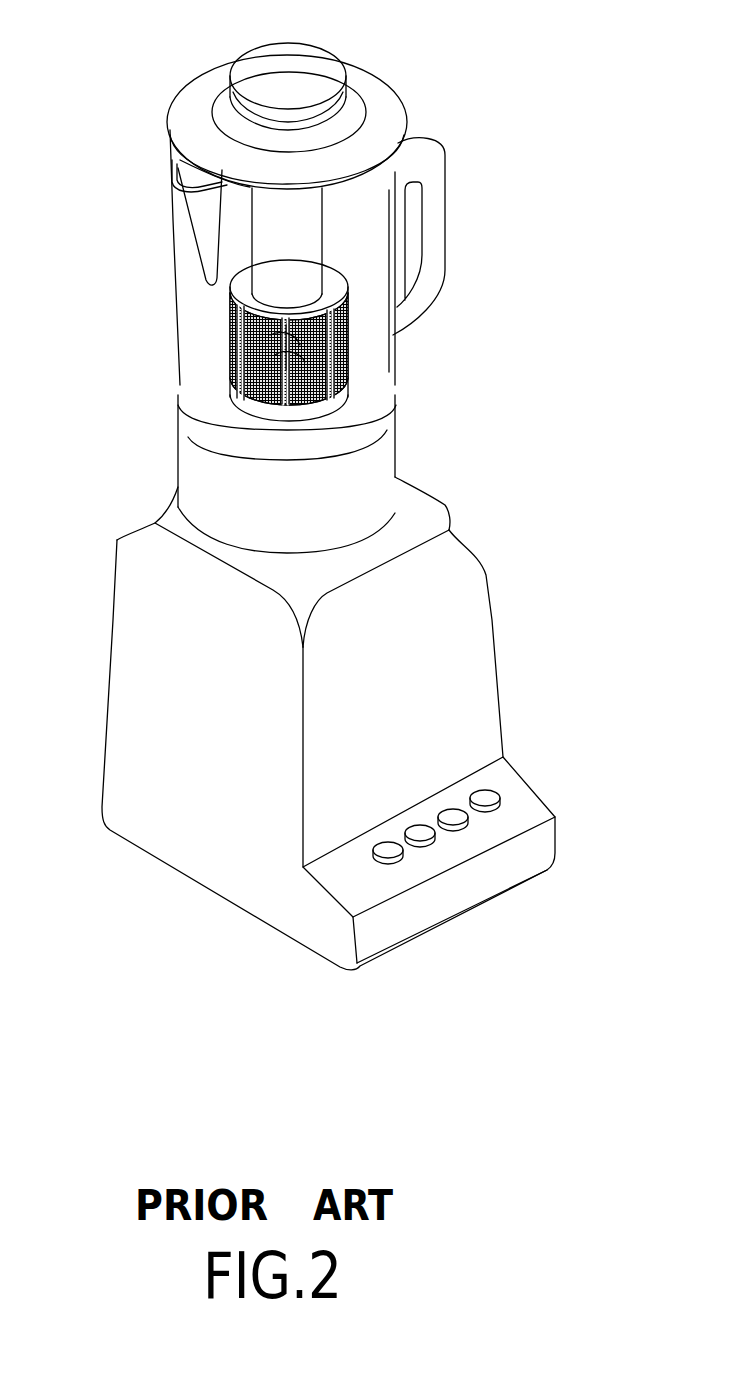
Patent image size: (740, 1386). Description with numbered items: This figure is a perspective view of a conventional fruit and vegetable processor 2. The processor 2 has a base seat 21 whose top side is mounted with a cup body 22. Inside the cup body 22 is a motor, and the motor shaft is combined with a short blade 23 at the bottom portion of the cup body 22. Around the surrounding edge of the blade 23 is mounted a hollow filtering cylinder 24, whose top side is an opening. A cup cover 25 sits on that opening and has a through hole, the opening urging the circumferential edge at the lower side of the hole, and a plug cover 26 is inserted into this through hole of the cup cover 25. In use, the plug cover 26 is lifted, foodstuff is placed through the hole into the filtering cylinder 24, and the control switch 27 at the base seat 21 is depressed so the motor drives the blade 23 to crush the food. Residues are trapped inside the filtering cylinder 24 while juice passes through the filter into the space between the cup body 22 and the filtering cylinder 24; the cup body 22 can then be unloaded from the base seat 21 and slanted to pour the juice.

The processor 2 is at (508, 532).
The base seat 21 is at (443, 647).
The cup body 22 is at (178, 358).
The blade 23 is at (227, 300).
The filtering cylinder 24 is at (228, 330).
The cup cover 25 is at (202, 98).
The plug cover 26 is at (317, 97).
The control switch 27 is at (480, 797).